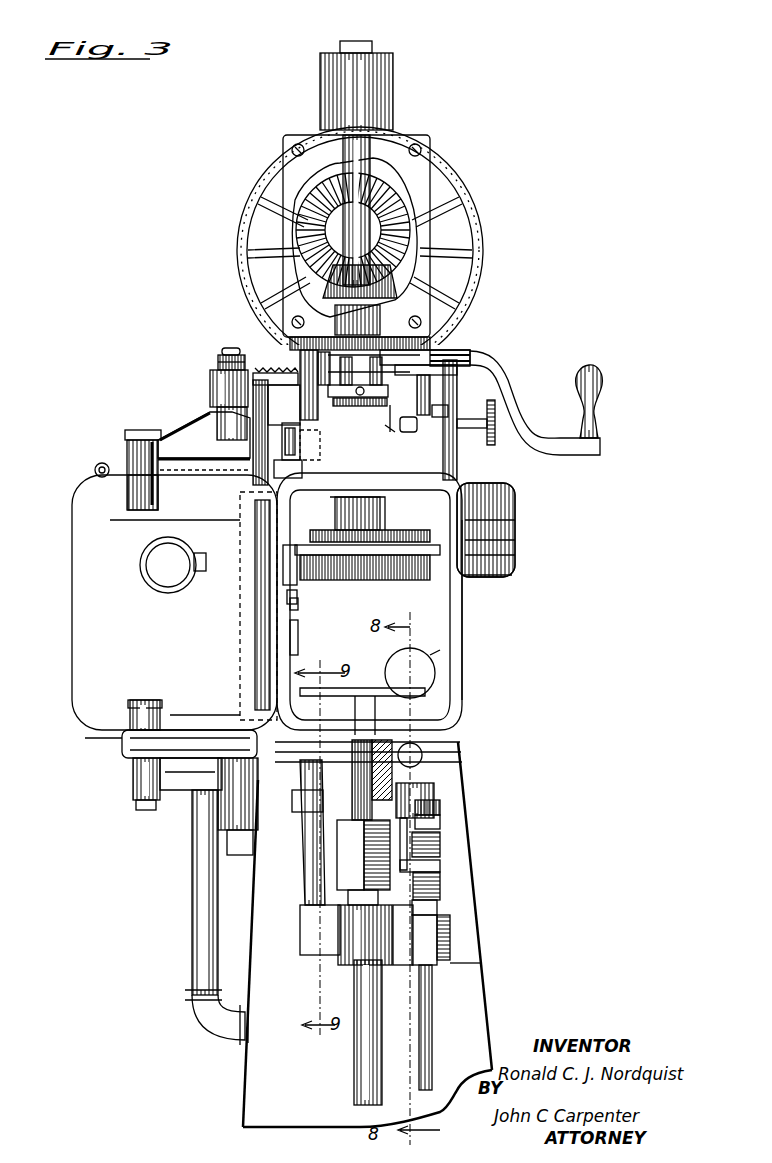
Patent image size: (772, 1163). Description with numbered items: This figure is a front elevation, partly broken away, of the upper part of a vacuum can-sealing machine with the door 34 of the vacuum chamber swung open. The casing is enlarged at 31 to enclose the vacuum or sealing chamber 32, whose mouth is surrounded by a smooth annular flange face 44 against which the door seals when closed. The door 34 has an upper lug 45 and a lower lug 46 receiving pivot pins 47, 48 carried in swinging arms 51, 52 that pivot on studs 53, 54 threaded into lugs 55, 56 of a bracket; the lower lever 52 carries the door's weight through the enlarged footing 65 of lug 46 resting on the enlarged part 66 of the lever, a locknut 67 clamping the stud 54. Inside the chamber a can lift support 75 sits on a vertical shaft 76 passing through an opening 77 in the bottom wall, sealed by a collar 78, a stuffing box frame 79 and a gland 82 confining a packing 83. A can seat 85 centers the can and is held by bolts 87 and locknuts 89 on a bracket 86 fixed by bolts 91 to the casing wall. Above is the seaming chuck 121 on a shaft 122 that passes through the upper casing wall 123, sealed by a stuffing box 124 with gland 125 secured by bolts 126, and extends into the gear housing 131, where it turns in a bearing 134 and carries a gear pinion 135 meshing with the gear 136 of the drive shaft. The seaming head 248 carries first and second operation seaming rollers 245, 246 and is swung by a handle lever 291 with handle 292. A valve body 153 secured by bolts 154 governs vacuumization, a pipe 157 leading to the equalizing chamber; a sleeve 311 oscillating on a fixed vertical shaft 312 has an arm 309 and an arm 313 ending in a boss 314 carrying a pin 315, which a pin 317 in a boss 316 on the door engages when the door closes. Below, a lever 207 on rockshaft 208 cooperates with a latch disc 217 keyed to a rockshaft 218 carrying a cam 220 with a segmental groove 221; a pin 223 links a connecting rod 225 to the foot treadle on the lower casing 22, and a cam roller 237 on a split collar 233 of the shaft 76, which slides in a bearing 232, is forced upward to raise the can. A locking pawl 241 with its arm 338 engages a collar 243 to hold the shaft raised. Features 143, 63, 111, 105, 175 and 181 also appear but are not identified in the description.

The bearing 134 is at (393, 83).
The gear housing 131 is at (400, 160).
The wheel rim 143 is at (470, 240).
The sleeve 311 is at (300, 320).
The arm 309 is at (335, 335).
The gear 136 is at (405, 222).
The shaft 122 is at (343, 170).
The gear pinion 135 is at (395, 278).
The stud 53 is at (232, 348).
The screw 63 is at (218, 365).
The lug 55 is at (212, 380).
The swinging arm 51 is at (195, 432).
The pivot pin 47 is at (140, 430).
The pin 317 is at (102, 463).
The projecting boss 316 is at (95, 470).
The upper lug 45 is at (128, 498).
The fixed vertical shaft 312 is at (320, 440).
The arm 313 is at (300, 455).
The pin 315 is at (285, 475).
The boss 314 is at (300, 468).
The stuffing box 124 is at (360, 410).
The gland 125 is at (440, 385).
The bolts 126 is at (410, 432).
The bolts 154 is at (445, 415).
The upper wall 123 is at (457, 460).
The valve body 153 is at (495, 425).
The handle lever 291 is at (510, 394).
The handle 292 is at (600, 372).
The door 34 is at (72, 665).
The stud 54 is at (238, 730).
The dial 111 is at (160, 573).
The pointer 105 is at (194, 568).
The bolts 87 is at (283, 555).
The locknuts 89 is at (287, 595).
The vacuum or sealing chamber 32 is at (450, 604).
The annular flange face 44 is at (462, 625).
The chuck 121 is at (335, 510).
The seaming head 248 is at (515, 500).
The first operation seaming roller 245 is at (515, 522).
The second operation seaming roller 246 is at (515, 542).
The casing enlargement 31 is at (513, 570).
The can seat 85 is at (400, 575).
The bracket 86 is at (298, 605).
The bolts 91 is at (310, 628).
The pin 175 is at (430, 652).
The roller 181 is at (430, 668).
The can lift support 75 is at (415, 688).
The opening 77 is at (440, 742).
The collar 78 is at (440, 752).
The stuffing box frame 79 is at (440, 762).
The packing 83 is at (422, 760).
The gland 82 is at (434, 790).
The rockshaft 208 is at (440, 806).
The lever 207 is at (440, 822).
The cam 220 is at (440, 848).
The segmental groove 221 is at (440, 865).
The cam roller 237 is at (440, 880).
The pin 223 is at (437, 908).
The horizontal rockshaft 218 is at (450, 940).
The connecting rod 225 is at (432, 1040).
The lower casing 22 is at (485, 990).
The arm 338 is at (300, 770).
The locknut 67 is at (340, 835).
The split collar 233 is at (345, 870).
The locking pawl 241 is at (350, 898).
The collar 243 is at (300, 935).
The bearing 232 is at (350, 960).
The latch disc 217 is at (400, 965).
The shaft 76 is at (354, 1062).
The lower lug 46 is at (150, 715).
The enlarged part 66 is at (122, 750).
The enlarged footing 65 is at (152, 736).
The lower lever 52 is at (180, 772).
The pivot pin 48 is at (145, 810).
The lug 56 is at (228, 815).
The pipe 157 is at (200, 920).